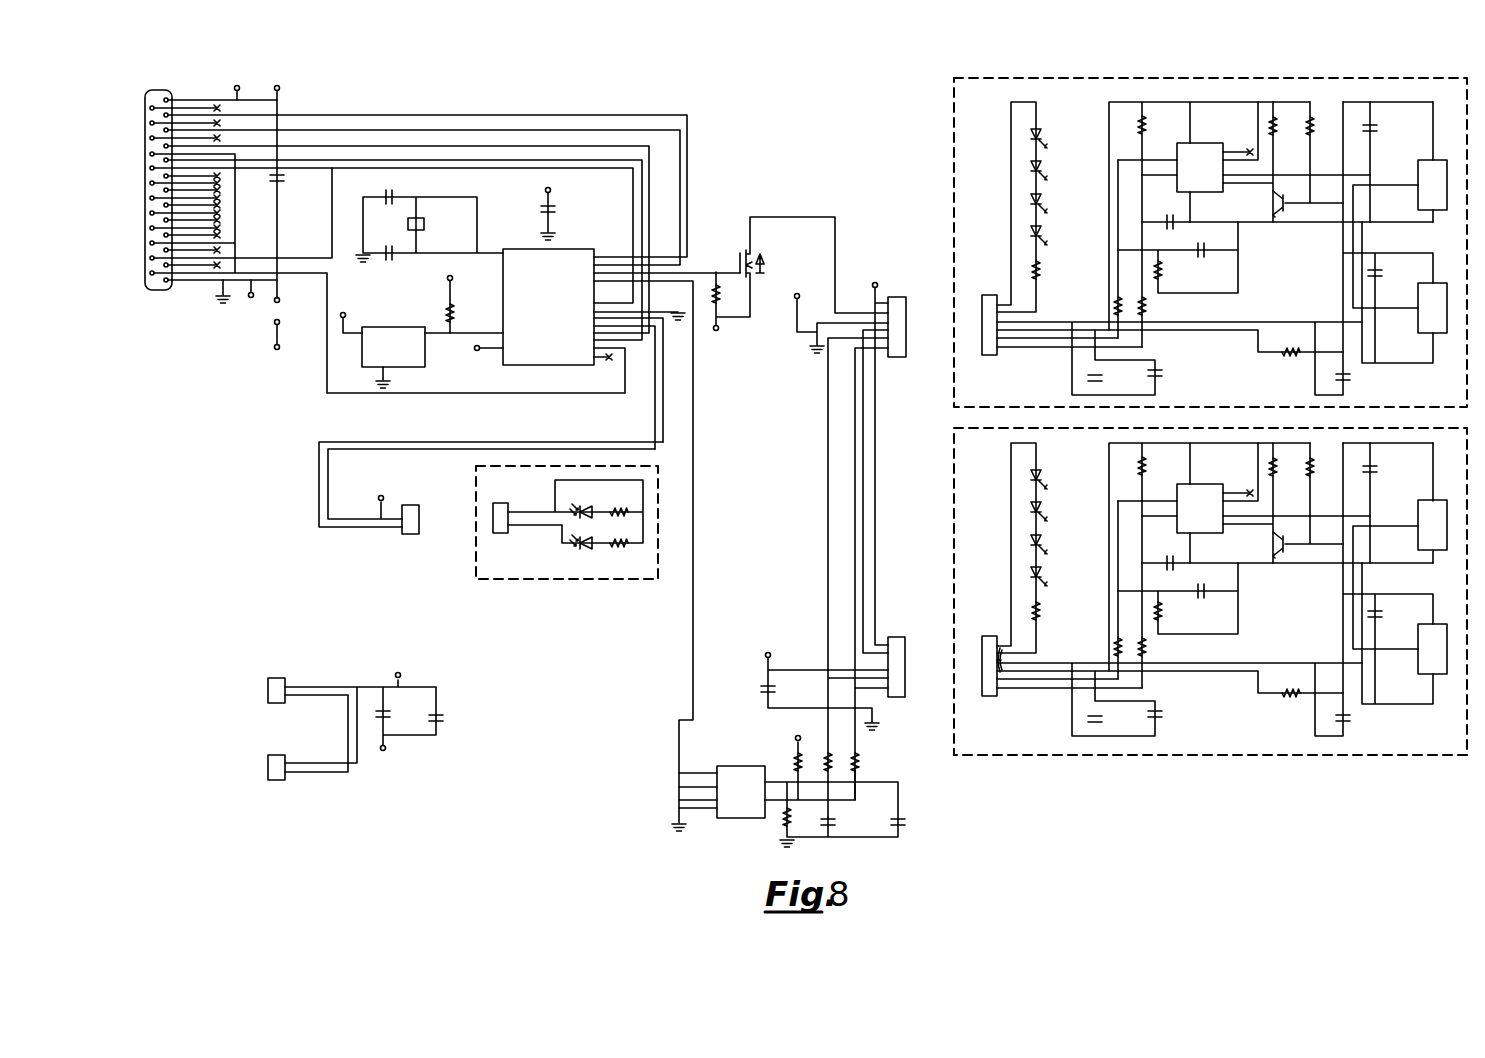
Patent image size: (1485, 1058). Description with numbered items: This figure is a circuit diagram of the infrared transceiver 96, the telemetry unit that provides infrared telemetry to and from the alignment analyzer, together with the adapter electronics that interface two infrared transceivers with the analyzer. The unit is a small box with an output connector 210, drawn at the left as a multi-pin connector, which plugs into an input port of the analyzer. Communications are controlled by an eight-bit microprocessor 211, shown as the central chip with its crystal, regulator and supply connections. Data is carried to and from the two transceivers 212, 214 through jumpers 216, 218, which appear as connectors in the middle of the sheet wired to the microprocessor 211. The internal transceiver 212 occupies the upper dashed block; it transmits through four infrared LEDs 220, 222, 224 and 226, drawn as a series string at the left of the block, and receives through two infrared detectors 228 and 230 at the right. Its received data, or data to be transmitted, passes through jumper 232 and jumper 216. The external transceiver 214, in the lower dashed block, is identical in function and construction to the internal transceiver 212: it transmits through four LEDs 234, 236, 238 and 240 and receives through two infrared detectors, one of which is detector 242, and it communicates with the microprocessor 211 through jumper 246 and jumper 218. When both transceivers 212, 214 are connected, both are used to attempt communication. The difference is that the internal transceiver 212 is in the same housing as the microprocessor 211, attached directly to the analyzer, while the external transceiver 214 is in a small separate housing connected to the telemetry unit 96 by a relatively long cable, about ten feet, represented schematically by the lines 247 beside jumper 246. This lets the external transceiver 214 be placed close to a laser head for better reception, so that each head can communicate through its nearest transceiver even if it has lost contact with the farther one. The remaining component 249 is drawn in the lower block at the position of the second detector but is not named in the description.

The infrared transceiver 96 is at (805, 130).
The output connector 210 is at (155, 92).
The microprocessor 211 is at (548, 366).
The internal transceiver 212 is at (1173, 242).
The external transceiver 214 is at (1173, 591).
The jumper 216 is at (897, 297).
The jumper 218 is at (897, 637).
The infrared LED 220 is at (1042, 131).
The infrared LED 222 is at (1042, 163).
The infrared LED 224 is at (1042, 196).
The infrared LED 226 is at (1042, 228).
The infrared detector 228 is at (1443, 211).
The infrared detector 230 is at (1443, 334).
The jumper 232 is at (990, 356).
The LED 234 is at (1042, 472).
The LED 236 is at (1042, 504).
The LED 238 is at (1042, 537).
The LED 240 is at (1042, 569).
The infrared detector 242 is at (1443, 551).
The jumper 246 is at (988, 697).
The lines 247 is at (998, 692).
The connector 249 is at (1443, 675).